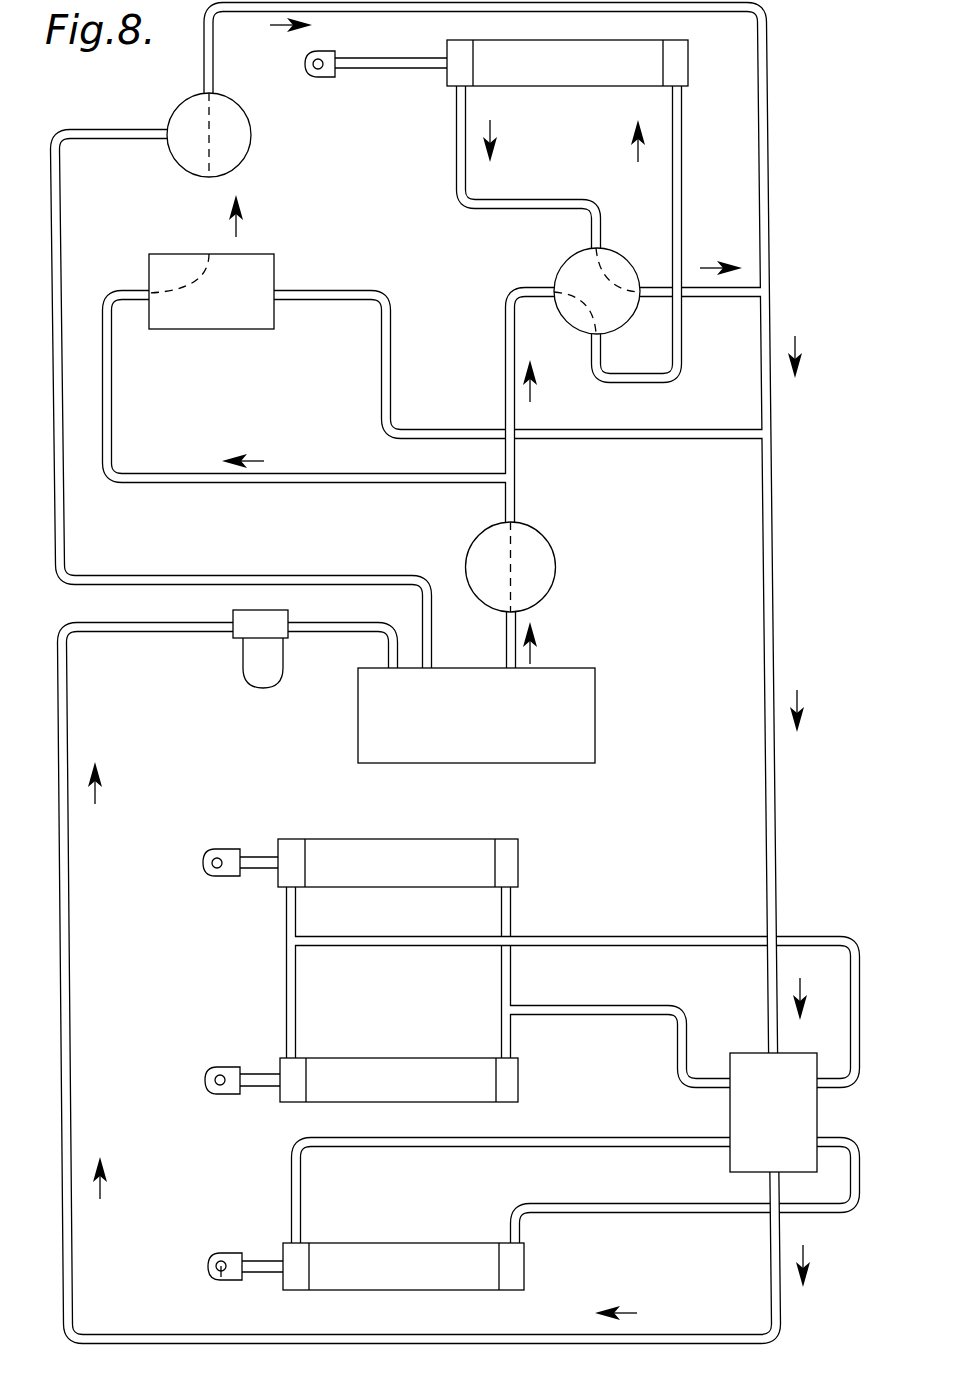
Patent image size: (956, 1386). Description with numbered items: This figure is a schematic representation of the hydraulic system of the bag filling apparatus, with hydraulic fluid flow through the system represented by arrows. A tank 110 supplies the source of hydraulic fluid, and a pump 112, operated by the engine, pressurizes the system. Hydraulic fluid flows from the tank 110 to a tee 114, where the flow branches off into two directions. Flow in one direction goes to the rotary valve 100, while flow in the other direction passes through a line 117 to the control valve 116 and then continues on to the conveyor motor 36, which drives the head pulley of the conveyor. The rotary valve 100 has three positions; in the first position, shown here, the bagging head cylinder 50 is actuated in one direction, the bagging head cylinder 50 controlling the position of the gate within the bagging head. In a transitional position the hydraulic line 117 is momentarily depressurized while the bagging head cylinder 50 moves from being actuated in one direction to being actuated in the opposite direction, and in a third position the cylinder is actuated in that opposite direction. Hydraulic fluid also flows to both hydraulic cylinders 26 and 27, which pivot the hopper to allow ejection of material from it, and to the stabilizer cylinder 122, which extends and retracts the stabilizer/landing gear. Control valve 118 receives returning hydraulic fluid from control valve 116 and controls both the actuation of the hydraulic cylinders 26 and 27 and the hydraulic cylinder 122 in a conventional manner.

The hydraulic cylinder 26 is at (443, 846).
The hydraulic cylinder 27 is at (445, 1058).
The hydraulic motor 36 is at (243, 116).
The hydraulic cylinder 50 is at (525, 62).
The rotary valve 100 is at (572, 258).
The tank 110 is at (487, 707).
The pump 112 is at (556, 565).
The tee 114 is at (516, 478).
The control valve 116 is at (197, 318).
The line 117 is at (283, 484).
The control valve 118 is at (793, 1122).
The hydraulic cylinder 122 is at (423, 1250).